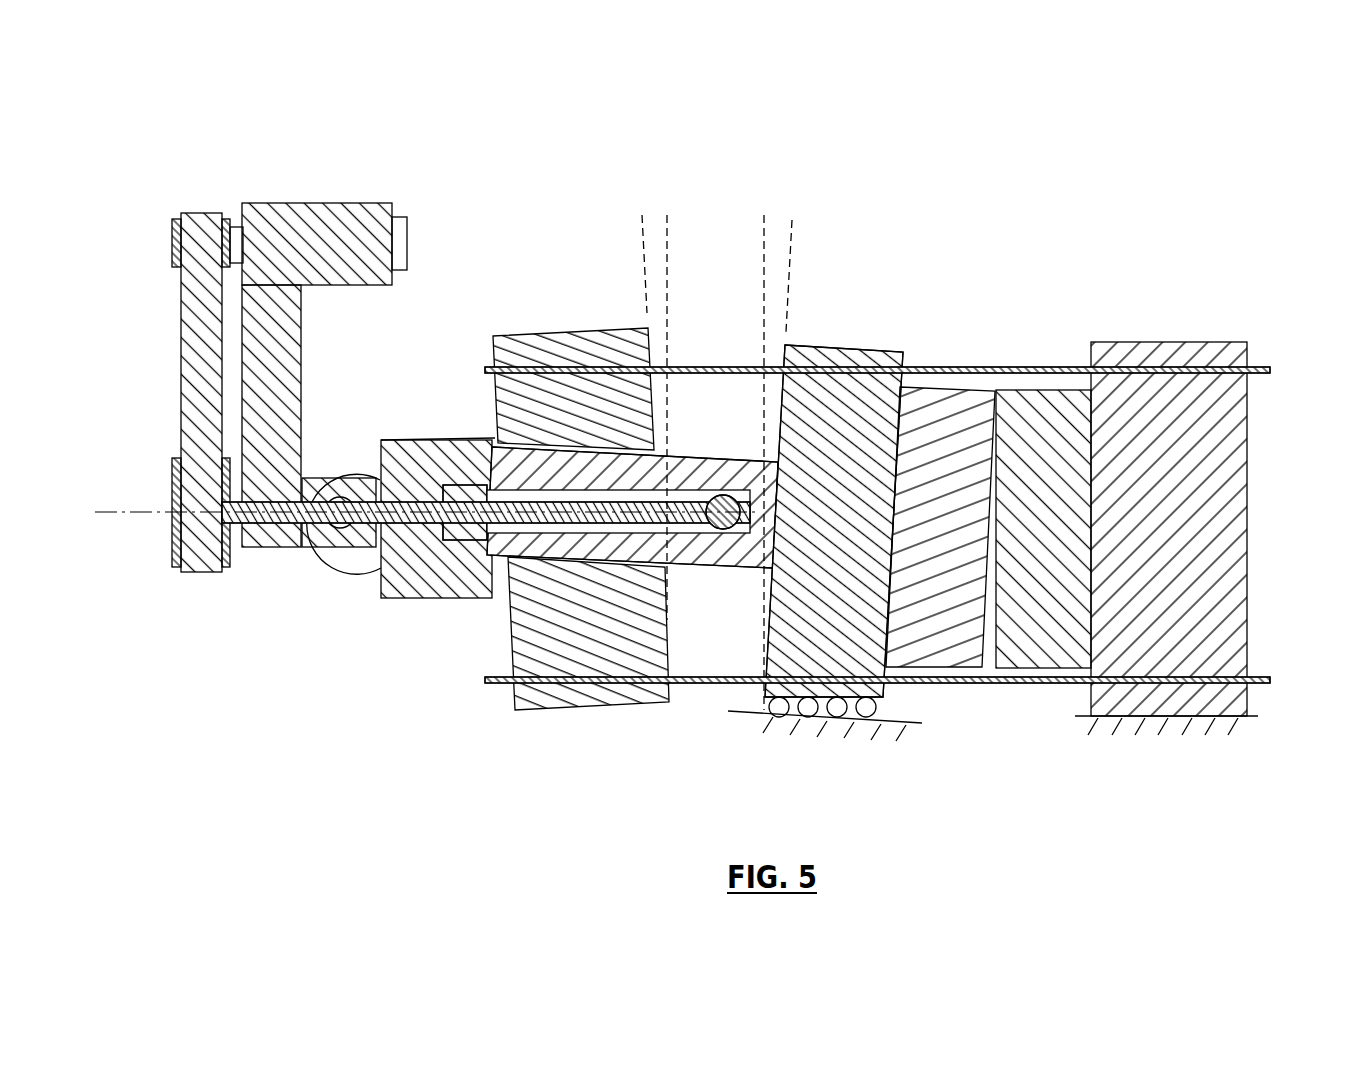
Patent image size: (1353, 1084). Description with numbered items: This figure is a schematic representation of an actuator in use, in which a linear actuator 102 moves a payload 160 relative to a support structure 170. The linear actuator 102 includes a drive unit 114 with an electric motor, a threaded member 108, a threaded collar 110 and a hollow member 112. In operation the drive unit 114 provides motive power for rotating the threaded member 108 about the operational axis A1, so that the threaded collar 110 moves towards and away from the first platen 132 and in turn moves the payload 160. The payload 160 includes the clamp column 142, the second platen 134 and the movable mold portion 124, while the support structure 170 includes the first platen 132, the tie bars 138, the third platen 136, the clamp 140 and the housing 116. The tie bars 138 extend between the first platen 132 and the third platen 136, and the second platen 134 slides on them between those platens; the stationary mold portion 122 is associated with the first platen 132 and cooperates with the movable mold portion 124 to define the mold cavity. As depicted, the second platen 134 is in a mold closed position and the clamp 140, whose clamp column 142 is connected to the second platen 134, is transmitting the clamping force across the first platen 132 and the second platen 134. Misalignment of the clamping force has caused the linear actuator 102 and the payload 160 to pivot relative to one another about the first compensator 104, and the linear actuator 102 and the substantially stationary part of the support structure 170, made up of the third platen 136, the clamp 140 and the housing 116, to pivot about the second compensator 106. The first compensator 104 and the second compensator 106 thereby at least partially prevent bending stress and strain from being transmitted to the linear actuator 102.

The linear actuator 102 is at (228, 630).
The first compensator 104 is at (720, 530).
The second compensator 106 is at (342, 478).
The threaded member 108 is at (315, 523).
The threaded collar 110 is at (460, 597).
The hollow member 112 is at (520, 522).
The drive unit 114 is at (160, 245).
The housing 116 is at (442, 437).
The stationary mold portion 122 is at (1045, 650).
The movable mold portion 124 is at (942, 645).
The first platen 132 is at (1153, 342).
The second platen 134 is at (830, 352).
The third platen 136 is at (583, 345).
The tie bars 138 is at (1267, 365).
The clamp 140 is at (517, 318).
The clamp column 142 is at (613, 552).
The payload 160 is at (823, 268).
The support structure 170 is at (1263, 272).
The operational axis A1 is at (128, 520).